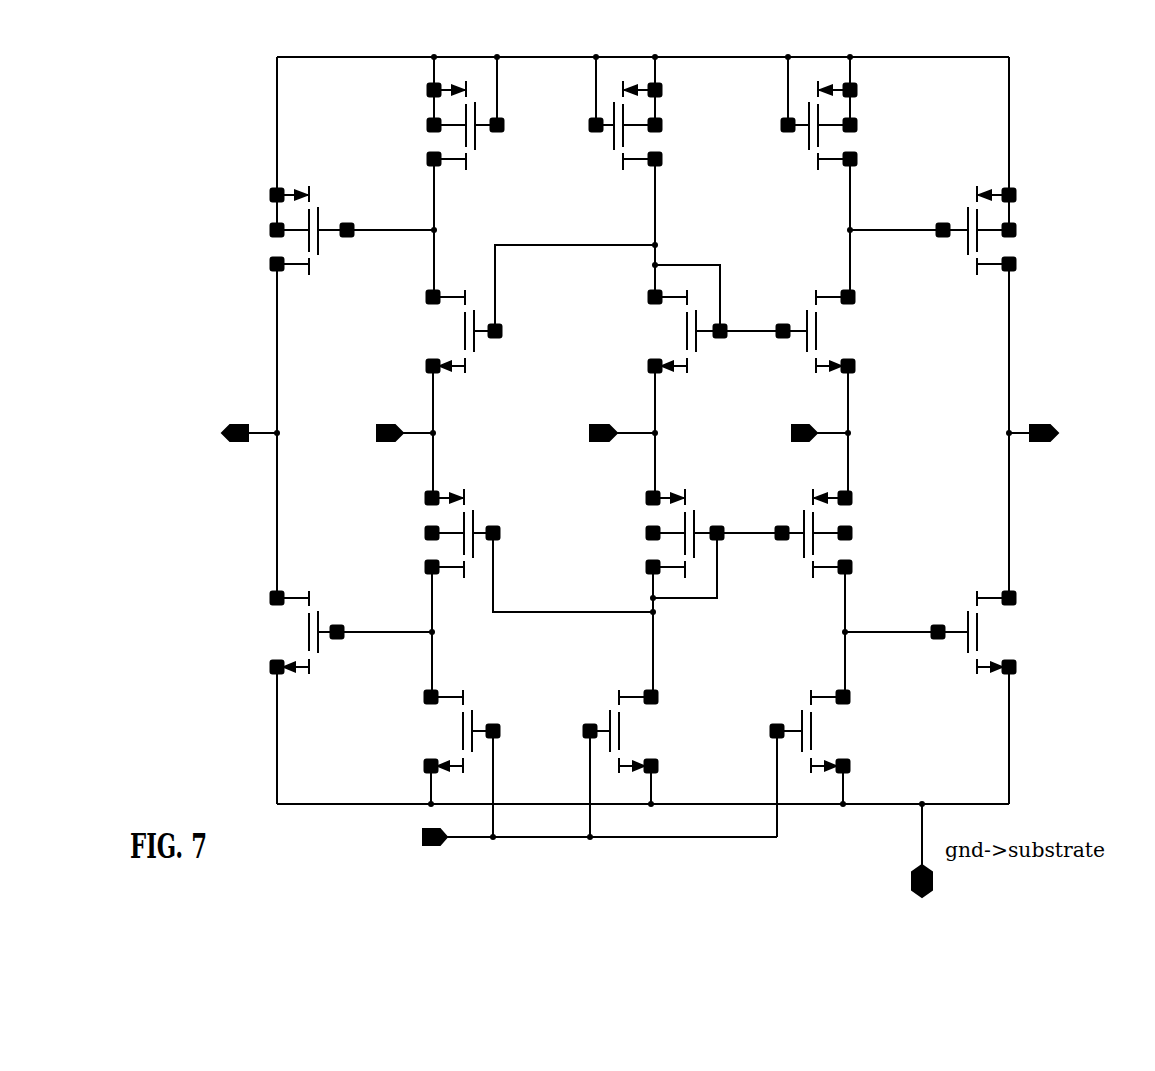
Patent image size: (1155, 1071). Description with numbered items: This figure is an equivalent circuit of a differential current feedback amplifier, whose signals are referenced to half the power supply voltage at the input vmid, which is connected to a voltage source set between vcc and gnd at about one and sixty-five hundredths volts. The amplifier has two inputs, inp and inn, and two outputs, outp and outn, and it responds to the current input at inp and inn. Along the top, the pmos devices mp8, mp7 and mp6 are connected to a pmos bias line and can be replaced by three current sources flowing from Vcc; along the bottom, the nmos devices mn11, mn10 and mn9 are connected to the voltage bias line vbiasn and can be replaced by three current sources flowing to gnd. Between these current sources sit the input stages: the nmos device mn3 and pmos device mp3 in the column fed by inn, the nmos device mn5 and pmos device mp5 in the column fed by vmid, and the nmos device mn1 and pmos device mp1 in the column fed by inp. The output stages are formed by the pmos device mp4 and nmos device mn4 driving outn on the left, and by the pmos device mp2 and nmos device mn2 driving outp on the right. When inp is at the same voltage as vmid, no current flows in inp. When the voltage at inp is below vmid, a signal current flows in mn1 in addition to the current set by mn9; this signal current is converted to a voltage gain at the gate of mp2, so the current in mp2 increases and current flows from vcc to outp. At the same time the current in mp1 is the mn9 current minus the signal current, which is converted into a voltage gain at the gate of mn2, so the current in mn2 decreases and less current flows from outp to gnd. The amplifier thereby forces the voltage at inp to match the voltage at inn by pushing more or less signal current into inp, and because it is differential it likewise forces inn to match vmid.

The pmos device mp8 is at (432, 125).
The pmos device mp7 is at (599, 125).
The pmos device mp6 is at (788, 125).
The pmos device mp4 is at (317, 230).
The pmos device mp2 is at (971, 230).
The pmos device mp3 is at (506, 550).
The pmos device mp5 is at (674, 543).
The pmos device mp1 is at (853, 533).
The nmos device mn3 is at (499, 309).
The nmos device mn5 is at (676, 319).
The nmos device mn1 is at (854, 331).
The nmos device mn4 is at (318, 632).
The nmos device mn2 is at (963, 632).
The nmos device mn11 is at (427, 763).
The nmos device mn10 is at (668, 763).
The nmos device mn9 is at (854, 763).
The output outn is at (223, 433).
The input inn is at (385, 433).
The input vmid is at (593, 433).
The input inp is at (797, 435).
The output outp is at (1067, 433).
The voltage bias line vbiasn is at (563, 839).
The ground gnd is at (900, 852).